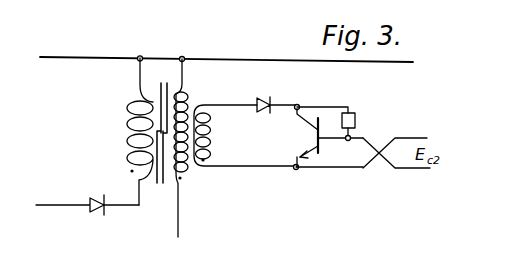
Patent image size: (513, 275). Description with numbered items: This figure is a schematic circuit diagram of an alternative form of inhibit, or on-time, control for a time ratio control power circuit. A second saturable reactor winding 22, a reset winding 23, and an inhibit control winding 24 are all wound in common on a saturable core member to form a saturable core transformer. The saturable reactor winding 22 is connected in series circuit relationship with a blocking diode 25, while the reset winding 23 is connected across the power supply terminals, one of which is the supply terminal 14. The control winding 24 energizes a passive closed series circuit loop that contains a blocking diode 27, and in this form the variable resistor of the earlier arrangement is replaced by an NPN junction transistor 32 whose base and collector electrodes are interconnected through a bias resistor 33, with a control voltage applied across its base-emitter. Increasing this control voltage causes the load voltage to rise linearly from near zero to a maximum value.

The power supply terminal 14 is at (81, 51).
The second saturable reactor winding 22 is at (126, 115).
The reset winding 23 is at (188, 95).
The inhibit control winding 24 is at (212, 140).
The blocking diode 25 is at (104, 216).
The blocking diode 27 is at (272, 103).
The NPN junction transistor 32 is at (322, 152).
The bias resistor 33 is at (357, 117).